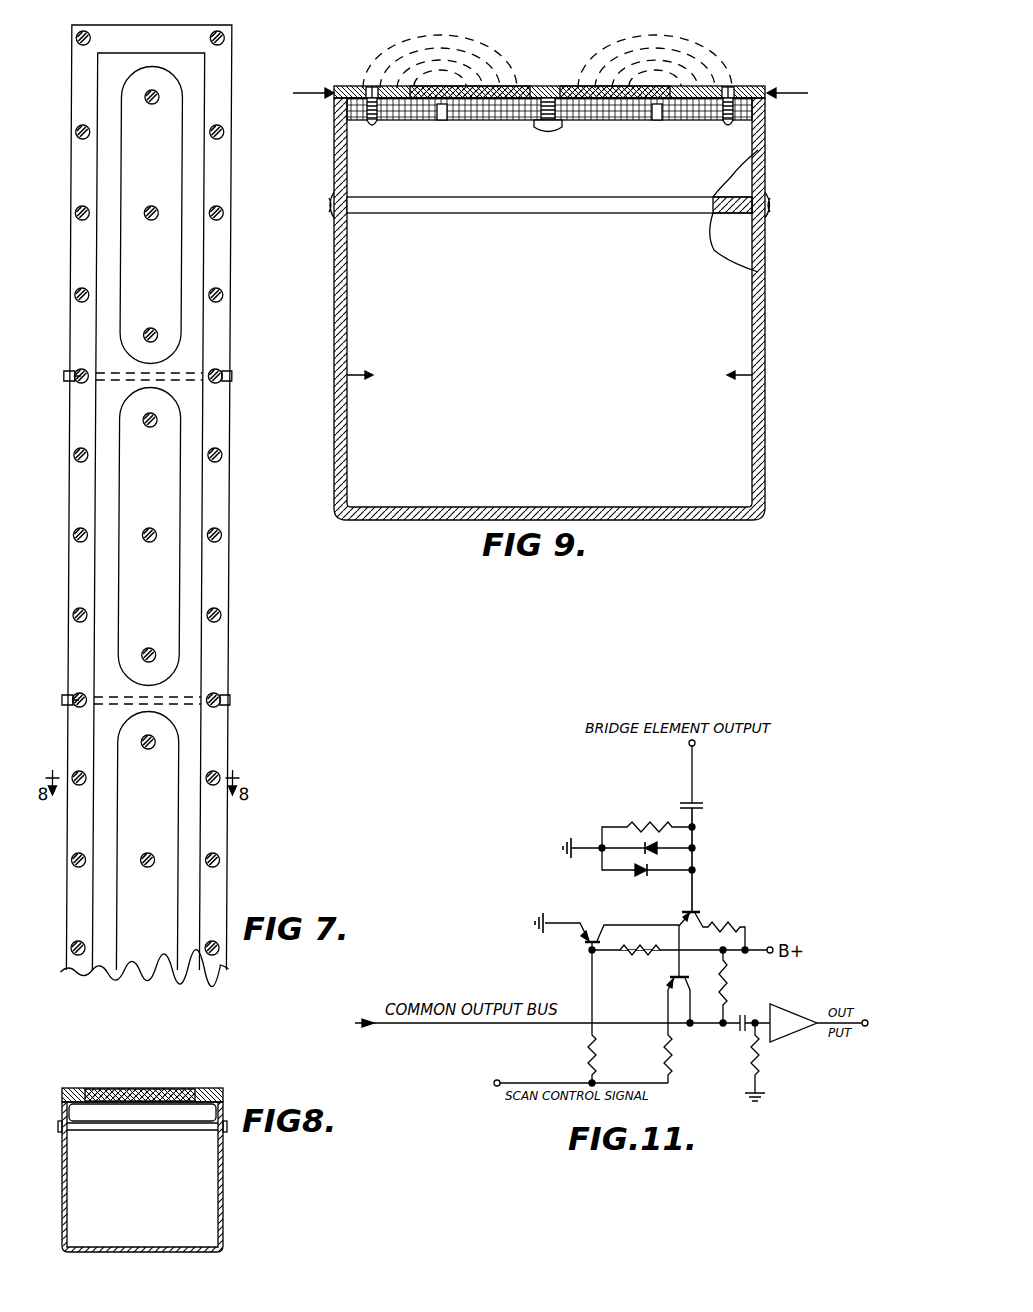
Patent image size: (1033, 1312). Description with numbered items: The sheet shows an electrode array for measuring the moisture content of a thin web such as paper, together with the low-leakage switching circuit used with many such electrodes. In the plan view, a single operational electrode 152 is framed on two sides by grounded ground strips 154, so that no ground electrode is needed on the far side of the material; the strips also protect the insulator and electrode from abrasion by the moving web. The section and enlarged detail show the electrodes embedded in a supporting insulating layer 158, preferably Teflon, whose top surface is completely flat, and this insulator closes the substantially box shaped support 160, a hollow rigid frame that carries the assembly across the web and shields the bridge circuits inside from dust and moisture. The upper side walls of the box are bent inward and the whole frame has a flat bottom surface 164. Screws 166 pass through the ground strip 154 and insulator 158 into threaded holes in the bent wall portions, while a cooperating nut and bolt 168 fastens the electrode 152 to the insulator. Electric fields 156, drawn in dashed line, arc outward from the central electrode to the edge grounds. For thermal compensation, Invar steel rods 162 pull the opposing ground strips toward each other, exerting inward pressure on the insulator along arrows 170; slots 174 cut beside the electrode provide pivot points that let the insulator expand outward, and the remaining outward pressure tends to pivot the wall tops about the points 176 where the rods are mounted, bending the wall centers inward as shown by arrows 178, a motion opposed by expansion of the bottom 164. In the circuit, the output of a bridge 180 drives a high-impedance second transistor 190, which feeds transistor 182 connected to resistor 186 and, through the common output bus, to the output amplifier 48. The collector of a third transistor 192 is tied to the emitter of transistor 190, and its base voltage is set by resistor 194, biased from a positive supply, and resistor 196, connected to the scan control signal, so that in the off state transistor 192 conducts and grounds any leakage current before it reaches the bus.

In FIG. 11, the output amplifier 48 is at (780, 1018).
In FIG. 7, the electrode 152 is at (153, 168).
In FIG. 8, the electrode 152 is at (150, 1088).
In FIG. 9, the electrode 152 is at (517, 86).
In FIG. 7, the ground strips 154 is at (218, 68).
In FIG. 8, the ground strips 154 is at (78, 1088).
In FIG. 9, the ground strips 154 is at (350, 71).
In FIG. 9, the electric fields 156 is at (440, 58).
In FIG. 8, the insulating layer 158 is at (168, 1108).
In FIG. 9, the insulating layer 158 is at (500, 121).
In FIG. 8, the box support 160 is at (222, 1208).
In FIG. 9, the box support 160 is at (382, 328).
In FIG. 7, the rods 162 is at (190, 375).
In FIG. 8, the rods 162 is at (178, 1128).
In FIG. 9, the rods 162 is at (598, 213).
In FIG. 8, the flat bottom surface 164 is at (110, 1250).
In FIG. 9, the flat bottom surface 164 is at (590, 513).
In FIG. 7, the screws 166 is at (76, 132).
In FIG. 9, the screws 166 is at (549, 118).
In FIG. 9, the nut and bolt 168 is at (544, 127).
In FIG. 9, the arrows 170 is at (555, 88).
In FIG. 9, the slots 174 is at (442, 108).
In FIG. 9, the points 176 is at (347, 208).
In FIG. 9, the arrows 178 is at (549, 386).
In FIG. 11, the bridges 180 is at (718, 758).
In FIG. 11, the transistor 182 is at (677, 976).
In FIG. 11, the resistor 186 is at (668, 1072).
In FIG. 11, the second transistor 190 is at (716, 893).
In FIG. 11, the third transistor 192 is at (608, 913).
In FIG. 11, the resistor 194 is at (628, 955).
In FIG. 11, the resistor 196 is at (590, 1072).